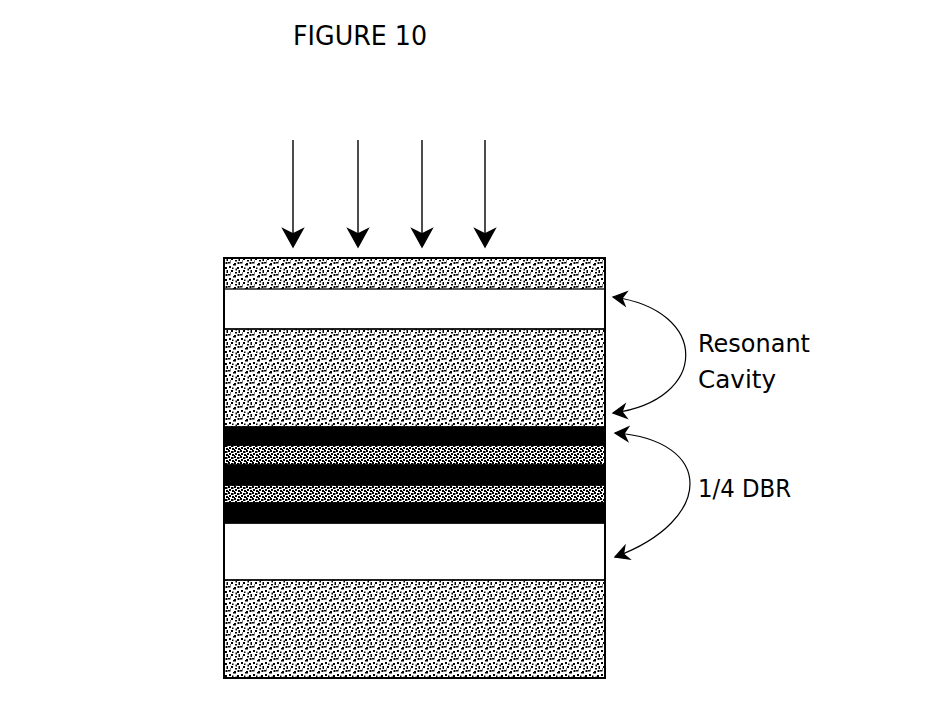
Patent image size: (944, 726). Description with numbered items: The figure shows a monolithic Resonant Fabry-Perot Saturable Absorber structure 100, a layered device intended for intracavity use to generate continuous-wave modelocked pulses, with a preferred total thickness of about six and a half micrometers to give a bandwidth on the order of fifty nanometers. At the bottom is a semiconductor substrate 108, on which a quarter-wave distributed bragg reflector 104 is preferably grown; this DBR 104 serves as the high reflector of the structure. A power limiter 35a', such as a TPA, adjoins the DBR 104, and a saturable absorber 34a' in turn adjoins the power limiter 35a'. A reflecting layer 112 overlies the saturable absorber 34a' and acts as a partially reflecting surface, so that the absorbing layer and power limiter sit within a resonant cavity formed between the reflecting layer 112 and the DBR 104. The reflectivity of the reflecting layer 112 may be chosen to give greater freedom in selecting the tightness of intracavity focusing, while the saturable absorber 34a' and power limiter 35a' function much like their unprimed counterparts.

The monolithic Resonant Fabry-Perot Saturable Absorber structure 100 is at (147, 427).
The reflecting layer 112 is at (215, 276).
The saturable absorber 34a' is at (361, 321).
The power limiter 35a' is at (361, 378).
The quarter-wave distributed bragg reflector 104 is at (203, 440).
The semiconductor substrate 108 is at (215, 617).